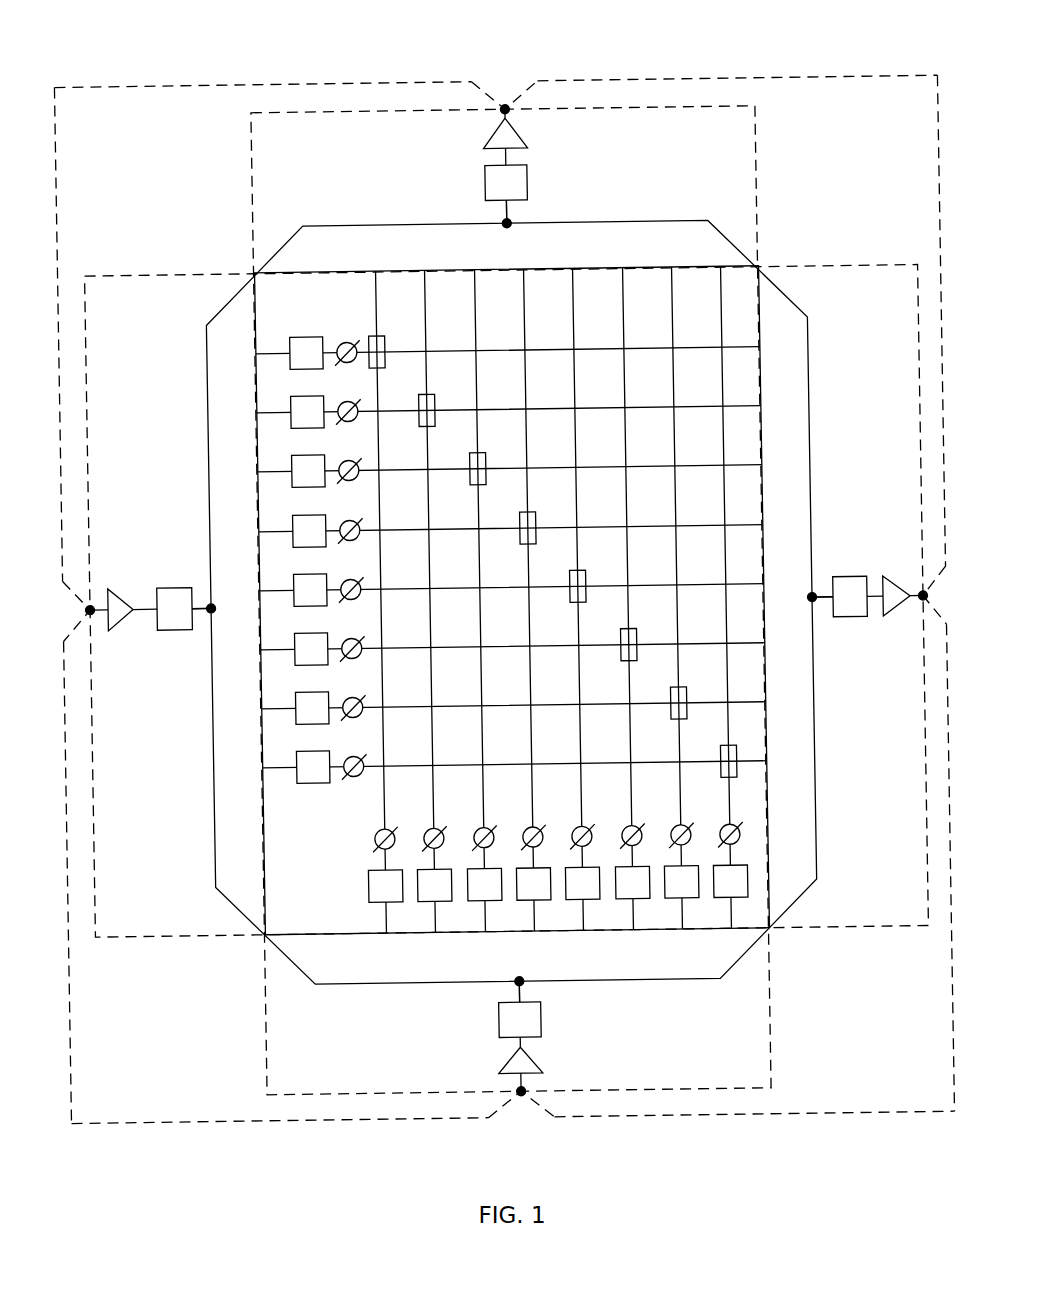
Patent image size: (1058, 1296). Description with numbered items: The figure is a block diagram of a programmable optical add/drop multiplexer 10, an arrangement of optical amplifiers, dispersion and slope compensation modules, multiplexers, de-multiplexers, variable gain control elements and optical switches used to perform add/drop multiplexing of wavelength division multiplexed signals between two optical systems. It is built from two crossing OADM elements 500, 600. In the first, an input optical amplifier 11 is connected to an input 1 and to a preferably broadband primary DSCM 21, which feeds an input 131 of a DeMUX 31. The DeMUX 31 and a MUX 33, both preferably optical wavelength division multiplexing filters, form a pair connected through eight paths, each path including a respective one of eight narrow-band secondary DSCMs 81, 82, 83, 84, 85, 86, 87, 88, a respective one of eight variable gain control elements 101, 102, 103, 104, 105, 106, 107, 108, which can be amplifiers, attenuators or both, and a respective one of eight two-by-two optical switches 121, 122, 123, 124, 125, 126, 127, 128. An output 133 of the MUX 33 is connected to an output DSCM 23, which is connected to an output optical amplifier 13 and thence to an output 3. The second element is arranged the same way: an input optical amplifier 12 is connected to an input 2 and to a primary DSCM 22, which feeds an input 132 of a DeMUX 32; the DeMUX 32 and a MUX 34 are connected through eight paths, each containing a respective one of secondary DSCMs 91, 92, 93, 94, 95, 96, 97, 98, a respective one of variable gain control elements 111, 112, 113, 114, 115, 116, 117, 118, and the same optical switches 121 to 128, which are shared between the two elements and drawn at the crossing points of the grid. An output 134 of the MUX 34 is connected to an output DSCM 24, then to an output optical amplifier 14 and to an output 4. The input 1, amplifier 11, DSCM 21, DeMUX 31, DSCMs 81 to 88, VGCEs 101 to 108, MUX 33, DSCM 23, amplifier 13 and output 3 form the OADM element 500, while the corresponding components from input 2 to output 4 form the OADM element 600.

The input 1 is at (79, 610).
The input 2 is at (526, 1105).
The output 3 is at (932, 595).
The output 4 is at (507, 94).
The programmable optical add/drop multiplexer 10 is at (188, 81).
The input optical amplifier 11 is at (112, 627).
The input optical amplifier 12 is at (527, 1058).
The output optical amplifier 13 is at (887, 622).
The output optical amplifier 14 is at (528, 148).
The primary DSCM 21 is at (165, 617).
The primary DSCM 22 is at (503, 1033).
The output DSCM 23 is at (840, 614).
The output DSCM 24 is at (503, 196).
The DeMUX 31 is at (227, 618).
The DeMUX 32 is at (504, 969).
The MUX 33 is at (778, 615).
The MUX 34 is at (503, 259).
The secondary DSCM 81 is at (301, 363).
The secondary DSCM 82 is at (301, 422).
The secondary DSCM 83 is at (301, 481).
The secondary DSCM 84 is at (301, 541).
The secondary DSCM 85 is at (301, 600).
The secondary DSCM 86 is at (301, 659).
The secondary DSCM 87 is at (301, 718).
The secondary DSCM 88 is at (301, 777).
The secondary DSCM 91 is at (372, 897).
The secondary DSCM 92 is at (421, 897).
The secondary DSCM 93 is at (471, 897).
The secondary DSCM 94 is at (520, 897).
The secondary DSCM 95 is at (569, 897).
The secondary DSCM 96 is at (619, 897).
The secondary DSCM 97 is at (668, 897).
The secondary DSCM 98 is at (717, 897).
The variable gain control element 101 is at (351, 340).
The variable gain control element 102 is at (351, 399).
The variable gain control element 103 is at (351, 458).
The variable gain control element 104 is at (351, 518).
The variable gain control element 105 is at (351, 577).
The variable gain control element 106 is at (351, 636).
The variable gain control element 107 is at (351, 695).
The variable gain control element 108 is at (351, 754).
The variable gain control element 111 is at (372, 831).
The variable gain control element 112 is at (421, 831).
The variable gain control element 113 is at (471, 831).
The variable gain control element 114 is at (520, 831).
The variable gain control element 115 is at (569, 831).
The variable gain control element 116 is at (619, 831).
The variable gain control element 117 is at (668, 831).
The variable gain control element 118 is at (717, 831).
The optical switch 121 is at (389, 336).
The optical switch 122 is at (438, 395).
The optical switch 123 is at (488, 454).
The optical switch 124 is at (537, 514).
The optical switch 125 is at (586, 573).
The optical switch 126 is at (636, 632).
The optical switch 127 is at (685, 691).
The optical switch 128 is at (734, 750).
The input of the DeMUX 131 is at (210, 603).
The input of the DeMUX 132 is at (512, 982).
The output of the MUX 133 is at (813, 600).
The output of the MUX 134 is at (512, 222).
The OADM element 500 is at (857, 271).
The OADM element 600 is at (765, 160).